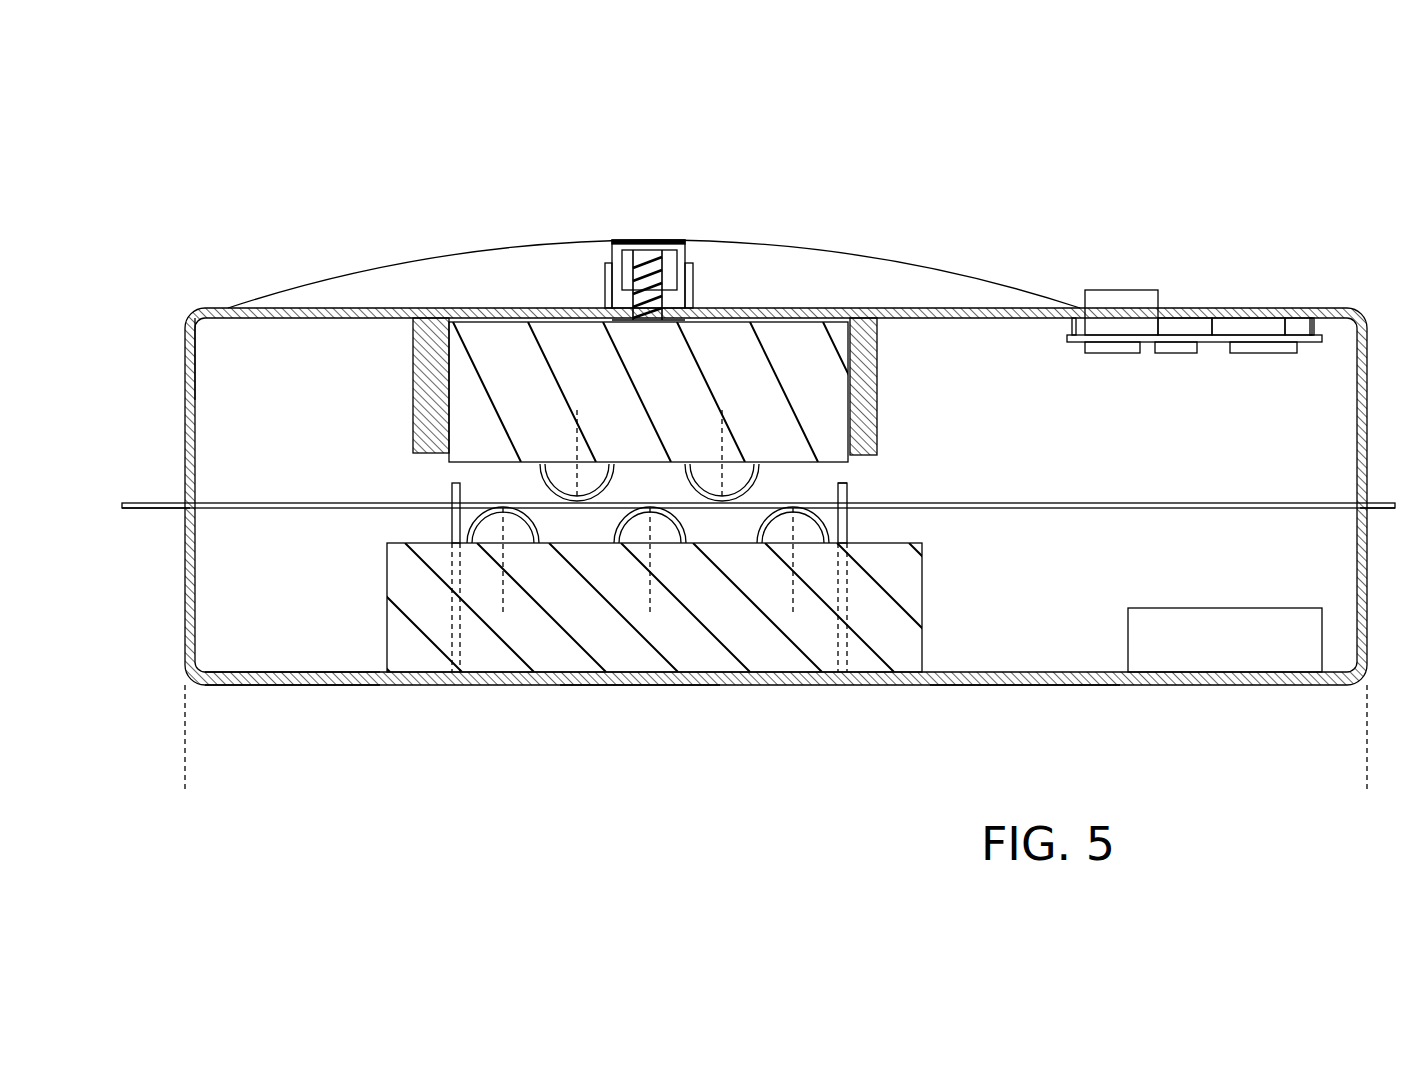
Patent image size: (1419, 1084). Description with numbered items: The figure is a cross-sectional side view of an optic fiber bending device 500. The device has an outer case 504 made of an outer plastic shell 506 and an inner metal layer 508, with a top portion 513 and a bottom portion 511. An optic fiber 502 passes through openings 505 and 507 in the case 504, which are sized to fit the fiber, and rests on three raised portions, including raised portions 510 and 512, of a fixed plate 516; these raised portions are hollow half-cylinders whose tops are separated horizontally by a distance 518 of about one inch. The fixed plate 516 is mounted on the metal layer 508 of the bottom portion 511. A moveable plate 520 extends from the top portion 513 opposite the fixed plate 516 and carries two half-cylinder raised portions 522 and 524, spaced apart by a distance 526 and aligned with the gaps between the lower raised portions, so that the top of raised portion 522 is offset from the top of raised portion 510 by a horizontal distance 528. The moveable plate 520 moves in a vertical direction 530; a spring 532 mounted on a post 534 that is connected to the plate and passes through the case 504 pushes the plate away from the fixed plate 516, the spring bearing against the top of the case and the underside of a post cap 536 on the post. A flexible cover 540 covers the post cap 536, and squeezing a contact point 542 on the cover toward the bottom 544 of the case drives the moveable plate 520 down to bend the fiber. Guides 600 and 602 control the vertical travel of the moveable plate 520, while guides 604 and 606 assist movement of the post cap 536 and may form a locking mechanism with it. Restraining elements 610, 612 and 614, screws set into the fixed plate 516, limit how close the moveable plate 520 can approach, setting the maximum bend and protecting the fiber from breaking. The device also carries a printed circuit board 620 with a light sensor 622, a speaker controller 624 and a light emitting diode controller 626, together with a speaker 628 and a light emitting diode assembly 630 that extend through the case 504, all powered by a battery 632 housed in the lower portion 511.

The optic fiber bending device 500 is at (185, 825).
The optic fiber 502 is at (135, 502).
The outer case 504 is at (183, 612).
The opening 505 is at (182, 515).
The outer plastic shell 506 is at (250, 686).
The opening 507 is at (1368, 515).
The inner metal layer 508 is at (243, 672).
The raised portion 510 is at (538, 522).
The bottom portion 511 is at (975, 686).
The raised portion 512 is at (688, 524).
The top portion 513 is at (188, 362).
The fixed plate 516 is at (649, 607).
The distance 518 is at (650, 597).
The moveable plate 520 is at (598, 392).
The raised portion 522 is at (545, 480).
The raised portion 524 is at (758, 484).
The distance 526 is at (577, 433).
The horizontal distance 528 is at (577, 493).
The vertical direction 530 is at (895, 395).
The spring 532 is at (668, 263).
The post 534 is at (638, 320).
The post cap 536 is at (633, 257).
The flexible cover 540 is at (378, 264).
The contact point 542 is at (650, 230).
The bottom 544 is at (632, 688).
The guide 600 is at (413, 380).
The guide 602 is at (877, 355).
The guide 604 is at (604, 293).
The guide 606 is at (694, 293).
The restraining element 610 is at (452, 530).
The restraining element 612 is at (847, 492).
The right pin 614 is at (850, 530).
The printed circuit board 620 is at (1300, 355).
The light sensor 622 is at (1175, 355).
The speaker controller 624 is at (1258, 355).
The light emitting diode controller 626 is at (1093, 355).
The speaker 628 is at (1250, 330).
The light emitting diode assembly 630 is at (1122, 290).
The battery 632 is at (1225, 640).